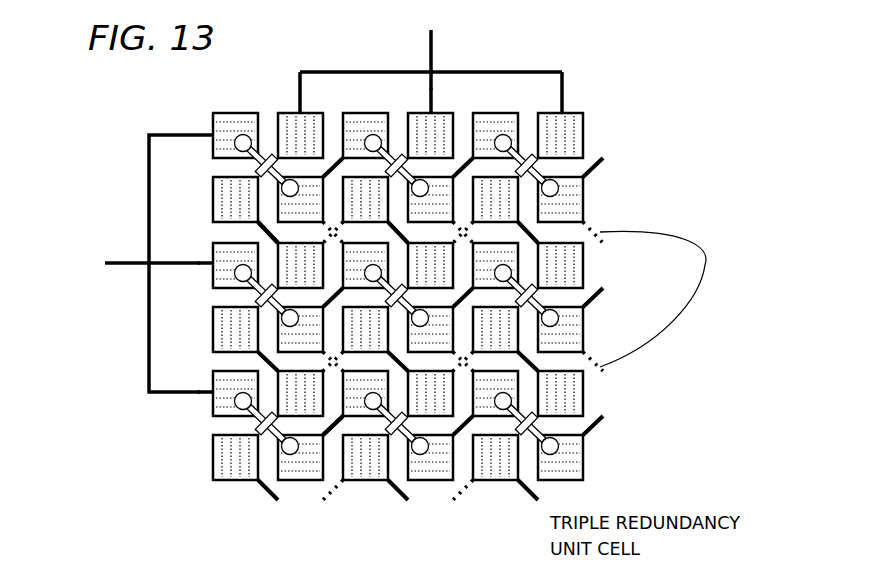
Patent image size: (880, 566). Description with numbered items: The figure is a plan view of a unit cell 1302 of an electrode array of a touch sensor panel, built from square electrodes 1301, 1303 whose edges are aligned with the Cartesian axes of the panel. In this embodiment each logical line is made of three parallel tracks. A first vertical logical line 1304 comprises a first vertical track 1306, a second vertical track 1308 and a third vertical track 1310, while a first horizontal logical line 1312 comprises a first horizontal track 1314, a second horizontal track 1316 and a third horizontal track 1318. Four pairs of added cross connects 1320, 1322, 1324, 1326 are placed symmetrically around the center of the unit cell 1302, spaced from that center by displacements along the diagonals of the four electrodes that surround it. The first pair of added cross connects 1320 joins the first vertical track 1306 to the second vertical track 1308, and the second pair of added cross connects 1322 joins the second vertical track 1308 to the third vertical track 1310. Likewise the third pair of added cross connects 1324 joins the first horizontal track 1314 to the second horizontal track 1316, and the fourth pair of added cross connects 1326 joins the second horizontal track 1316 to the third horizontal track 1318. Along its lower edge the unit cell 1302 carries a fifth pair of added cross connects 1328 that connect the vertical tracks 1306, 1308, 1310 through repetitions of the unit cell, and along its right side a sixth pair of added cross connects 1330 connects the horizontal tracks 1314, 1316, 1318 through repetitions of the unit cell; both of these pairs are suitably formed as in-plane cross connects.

The square electrode 1301 is at (541, 122).
The unit cell 1302 is at (385, 45).
The square electrode 1303 is at (582, 170).
The first vertical logical line 1304 is at (433, 50).
The first vertical track 1306 is at (297, 110).
The second vertical track 1308 is at (430, 103).
The third vertical track 1310 is at (563, 100).
The first horizontal logical line 1312 is at (145, 262).
The first horizontal track 1314 is at (198, 133).
The second horizontal track 1316 is at (210, 262).
The third horizontal track 1318 is at (213, 390).
The first pair of added cross connects 1320 is at (328, 362).
The second pair of added cross connects 1322 is at (470, 357).
The third pair of added cross connects 1324 is at (213, 222).
The fourth pair of added cross connects 1326 is at (598, 366).
The fifth pair of added cross connects 1328 is at (453, 494).
The sixth pair of added cross connects 1330 is at (677, 299).